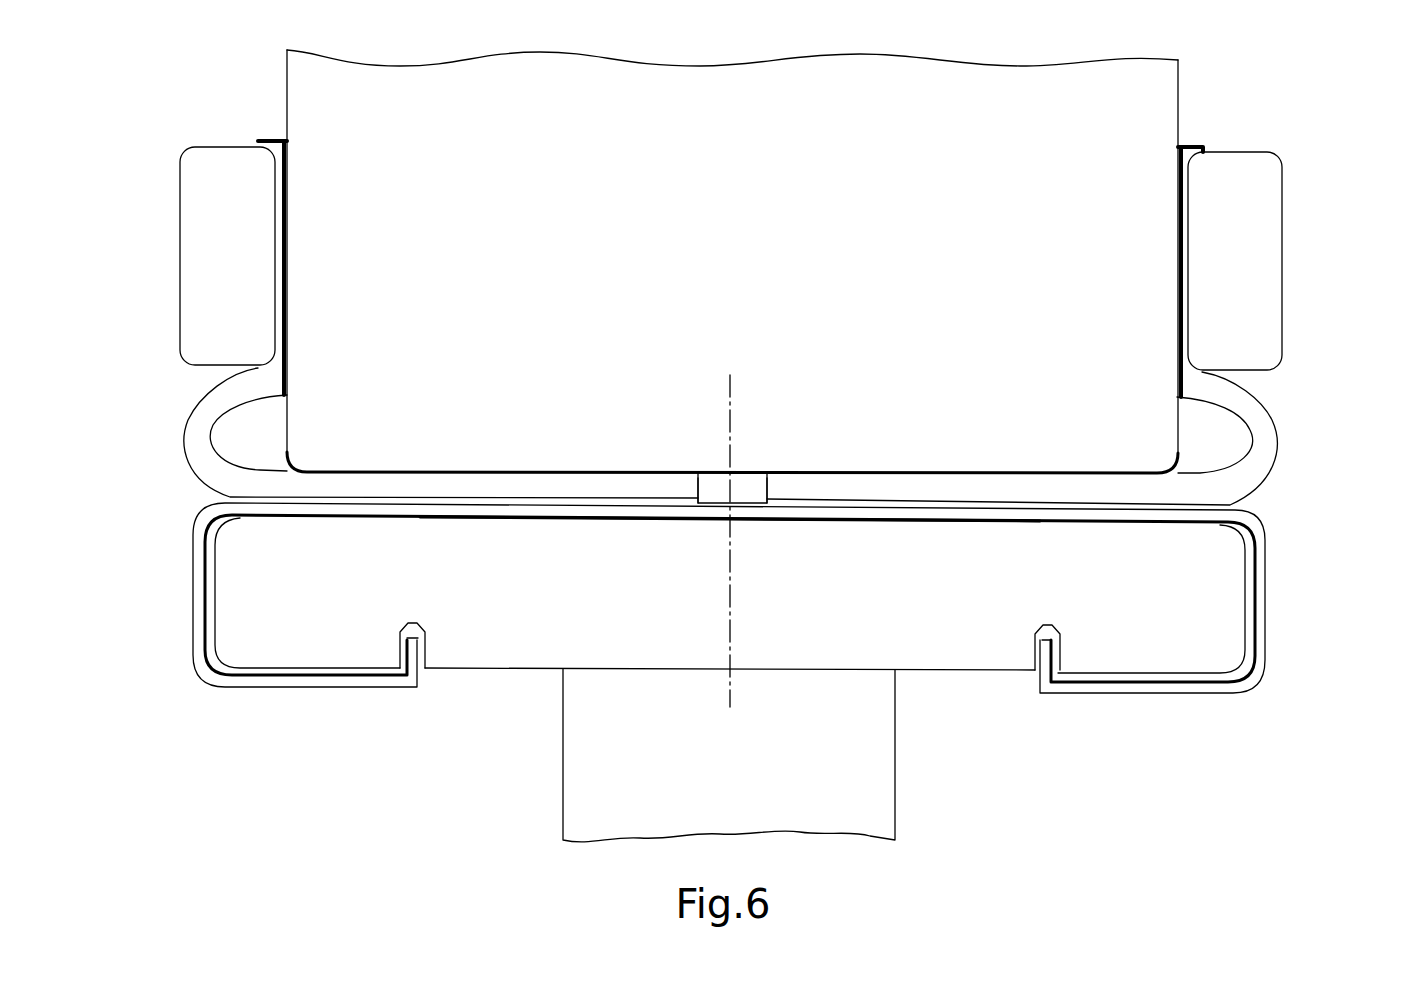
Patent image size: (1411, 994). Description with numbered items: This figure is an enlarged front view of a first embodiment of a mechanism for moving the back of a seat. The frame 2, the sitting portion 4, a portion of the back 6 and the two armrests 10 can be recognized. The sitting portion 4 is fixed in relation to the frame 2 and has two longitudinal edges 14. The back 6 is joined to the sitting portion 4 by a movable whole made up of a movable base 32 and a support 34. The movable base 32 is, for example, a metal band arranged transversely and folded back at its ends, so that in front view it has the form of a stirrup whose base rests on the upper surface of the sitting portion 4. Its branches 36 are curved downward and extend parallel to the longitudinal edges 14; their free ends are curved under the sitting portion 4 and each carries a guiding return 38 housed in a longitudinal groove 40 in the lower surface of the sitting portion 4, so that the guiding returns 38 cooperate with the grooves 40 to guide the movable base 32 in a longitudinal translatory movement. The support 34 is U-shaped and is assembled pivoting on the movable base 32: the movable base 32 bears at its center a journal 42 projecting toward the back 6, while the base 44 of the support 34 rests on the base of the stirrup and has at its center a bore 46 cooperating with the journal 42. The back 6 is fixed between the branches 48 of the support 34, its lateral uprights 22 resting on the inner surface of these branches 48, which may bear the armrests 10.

The frame 2 is at (882, 762).
The sitting portion 4 is at (1240, 598).
The back 6 is at (1160, 96).
The armrests 10 is at (205, 236).
The longitudinal edges 14 is at (215, 604).
The lateral uprights 22 is at (287, 95).
The movable base 32 is at (838, 512).
The support 34 is at (1265, 438).
The branches 36 is at (200, 582).
The guiding return 38 is at (412, 653).
The longitudinal groove 40 is at (412, 623).
The journal 42 is at (752, 482).
The base 44 is at (898, 485).
The bore 46 is at (695, 485).
The branches 48 is at (282, 222).